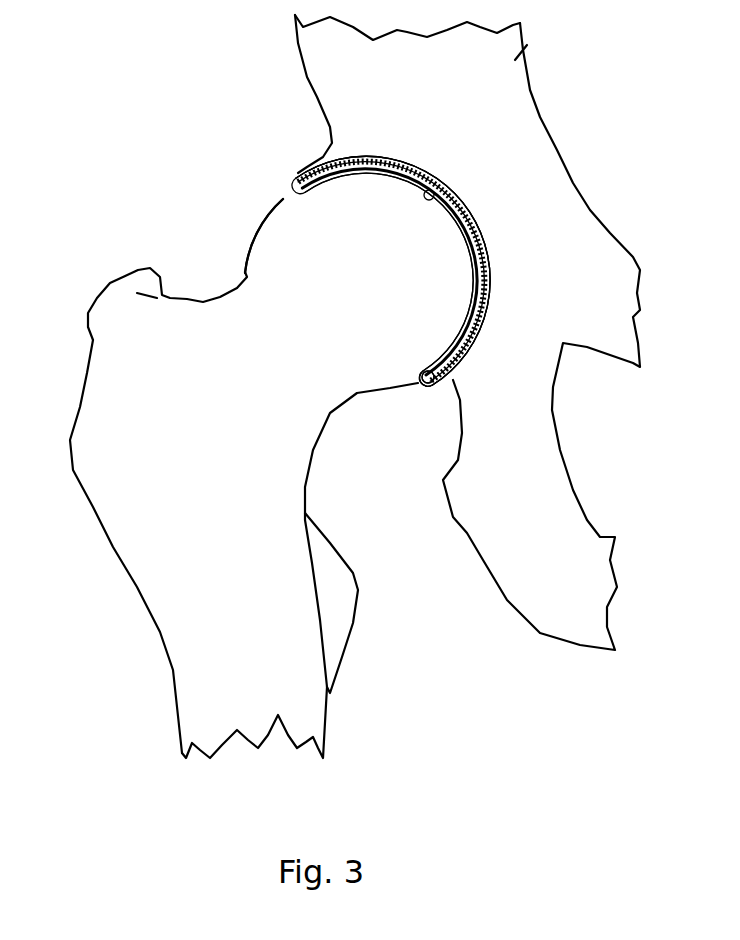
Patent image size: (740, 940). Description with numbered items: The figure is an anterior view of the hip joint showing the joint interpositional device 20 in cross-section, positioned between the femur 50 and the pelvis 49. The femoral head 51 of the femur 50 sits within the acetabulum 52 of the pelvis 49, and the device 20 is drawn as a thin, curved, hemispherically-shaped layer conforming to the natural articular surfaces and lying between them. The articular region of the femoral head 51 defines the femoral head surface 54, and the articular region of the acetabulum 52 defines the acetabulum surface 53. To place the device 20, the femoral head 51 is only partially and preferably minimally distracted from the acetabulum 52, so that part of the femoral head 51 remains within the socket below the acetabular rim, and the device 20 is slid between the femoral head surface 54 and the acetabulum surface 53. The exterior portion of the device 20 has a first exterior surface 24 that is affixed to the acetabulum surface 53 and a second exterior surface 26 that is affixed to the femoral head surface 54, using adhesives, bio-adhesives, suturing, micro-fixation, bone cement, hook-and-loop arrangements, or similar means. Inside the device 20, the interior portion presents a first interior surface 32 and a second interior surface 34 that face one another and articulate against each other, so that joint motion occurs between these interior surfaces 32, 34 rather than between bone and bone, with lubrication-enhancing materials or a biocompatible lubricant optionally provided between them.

The joint interpositional device 20 is at (477, 334).
The first exterior surface 24 is at (551, 244).
The second exterior surface 26 is at (372, 352).
The first interior surface 32 is at (426, 606).
The second interior surface 34 is at (425, 379).
The pelvis 49 is at (467, 332).
The femur 50 is at (222, 478).
The femoral head 51 is at (250, 215).
The acetabulum 52 is at (464, 249).
The acetabulum surface 53 is at (620, 84).
The femoral head surface 54 is at (357, 533).